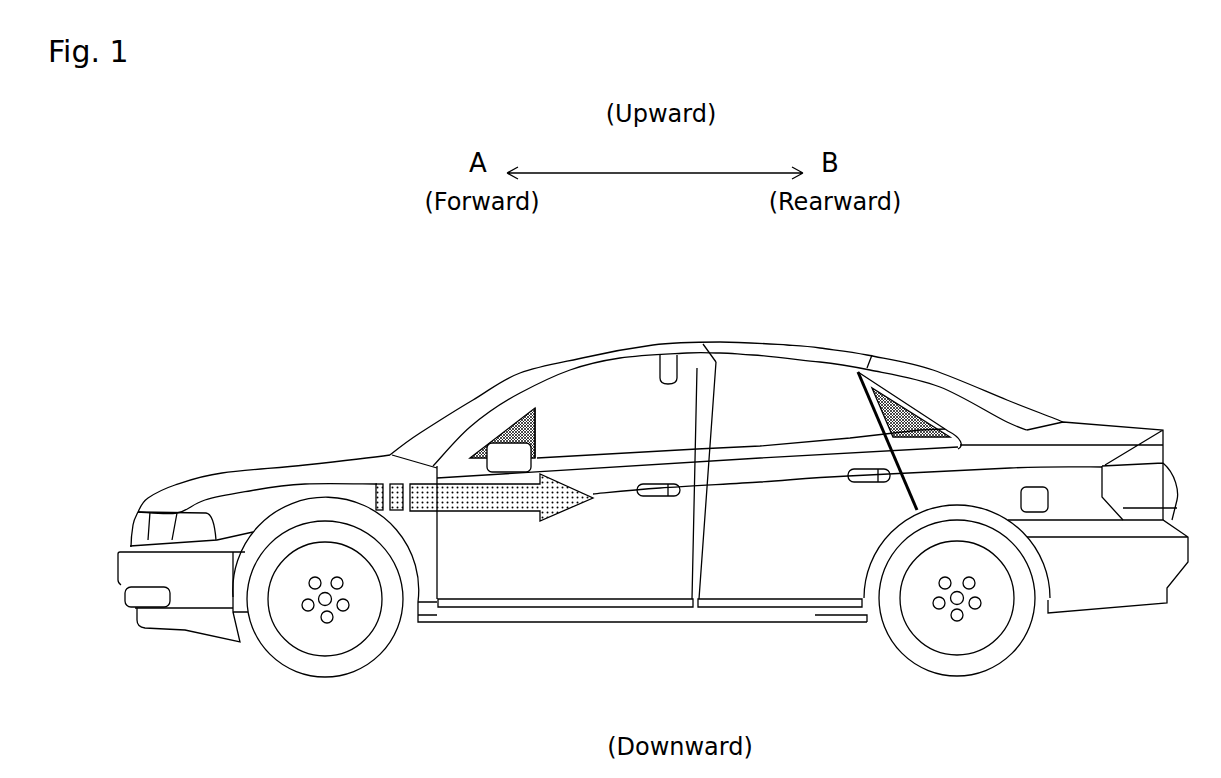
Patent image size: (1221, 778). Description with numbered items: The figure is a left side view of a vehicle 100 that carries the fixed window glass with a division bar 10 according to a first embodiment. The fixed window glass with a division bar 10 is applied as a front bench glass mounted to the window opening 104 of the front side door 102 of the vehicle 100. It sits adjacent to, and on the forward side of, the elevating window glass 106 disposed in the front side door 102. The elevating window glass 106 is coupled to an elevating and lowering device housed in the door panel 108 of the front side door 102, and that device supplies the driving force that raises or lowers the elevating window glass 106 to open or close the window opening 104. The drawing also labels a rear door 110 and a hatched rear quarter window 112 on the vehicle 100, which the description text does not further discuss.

The fixed window glass with a division bar 10 is at (490, 416).
The vehicle 100 is at (854, 302).
The front side door 102 is at (534, 563).
The window opening 104 is at (677, 366).
The elevating window glass 106 is at (612, 415).
The door panel 108 is at (622, 552).
The rear door 110 is at (786, 562).
The rear quarter window 112 is at (929, 408).